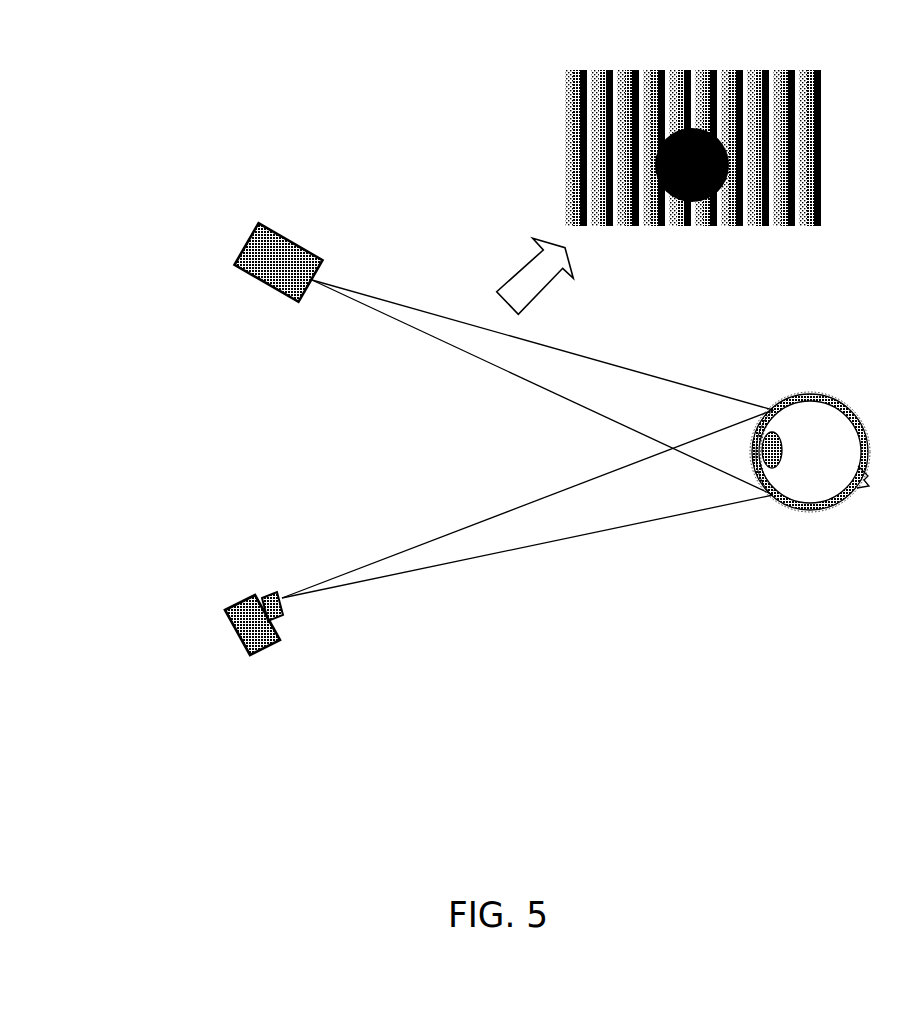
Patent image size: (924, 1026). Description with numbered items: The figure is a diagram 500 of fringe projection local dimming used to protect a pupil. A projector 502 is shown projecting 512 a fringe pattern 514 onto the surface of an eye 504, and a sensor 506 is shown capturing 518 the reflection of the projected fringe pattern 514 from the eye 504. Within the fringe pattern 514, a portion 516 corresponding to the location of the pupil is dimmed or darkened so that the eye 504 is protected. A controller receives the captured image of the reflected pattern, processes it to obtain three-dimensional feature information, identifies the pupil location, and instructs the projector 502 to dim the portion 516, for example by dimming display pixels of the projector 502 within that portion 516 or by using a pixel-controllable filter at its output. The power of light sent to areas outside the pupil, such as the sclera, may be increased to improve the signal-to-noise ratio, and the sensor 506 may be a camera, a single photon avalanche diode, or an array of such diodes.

The diagram 500 is at (464, 32).
The projector 502 is at (243, 247).
The eye 504 is at (823, 510).
The sensor 506 is at (228, 628).
The projecting 512 is at (415, 327).
The fringe pattern 514 is at (800, 226).
The portion of the fringe pattern 516 is at (695, 201).
The capturing 518 is at (538, 550).